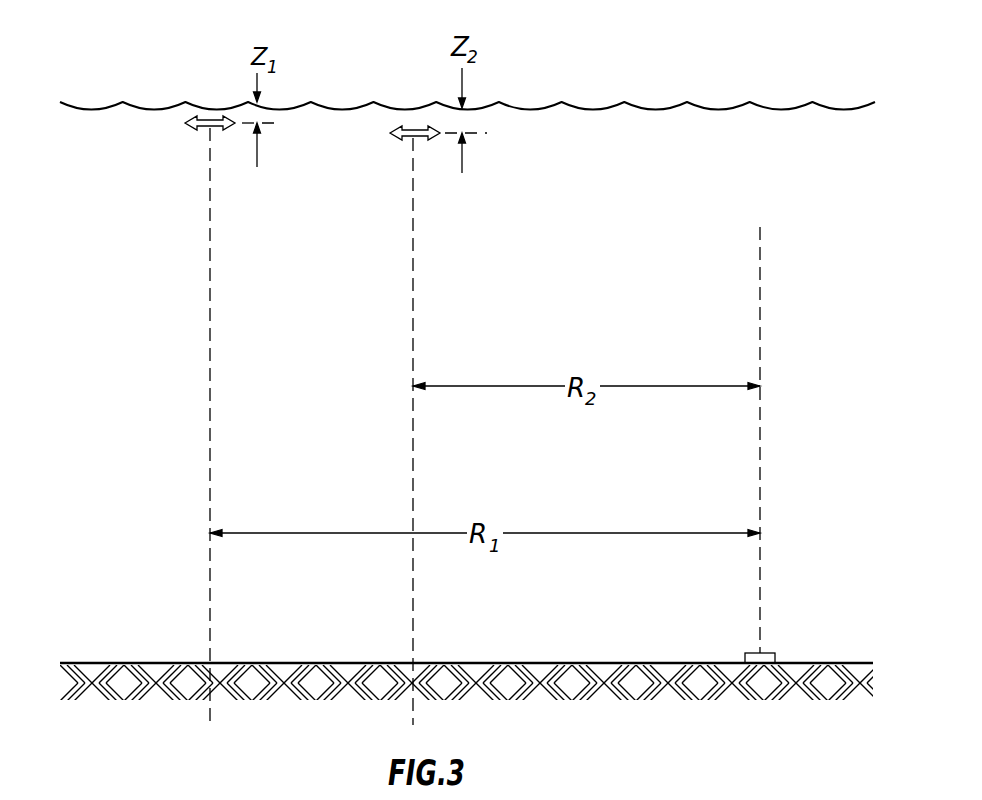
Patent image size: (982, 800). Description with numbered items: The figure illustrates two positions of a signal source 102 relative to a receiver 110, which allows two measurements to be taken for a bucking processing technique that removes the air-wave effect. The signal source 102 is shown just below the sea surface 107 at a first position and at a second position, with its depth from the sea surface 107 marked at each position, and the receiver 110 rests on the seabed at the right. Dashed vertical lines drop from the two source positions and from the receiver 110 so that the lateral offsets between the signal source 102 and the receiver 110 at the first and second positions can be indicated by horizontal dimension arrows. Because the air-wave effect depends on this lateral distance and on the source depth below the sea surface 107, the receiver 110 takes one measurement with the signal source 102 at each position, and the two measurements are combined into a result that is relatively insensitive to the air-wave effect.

The signal source 102 is at (193, 130).
The sea surface 107 is at (725, 108).
The receiver 110 is at (765, 655).